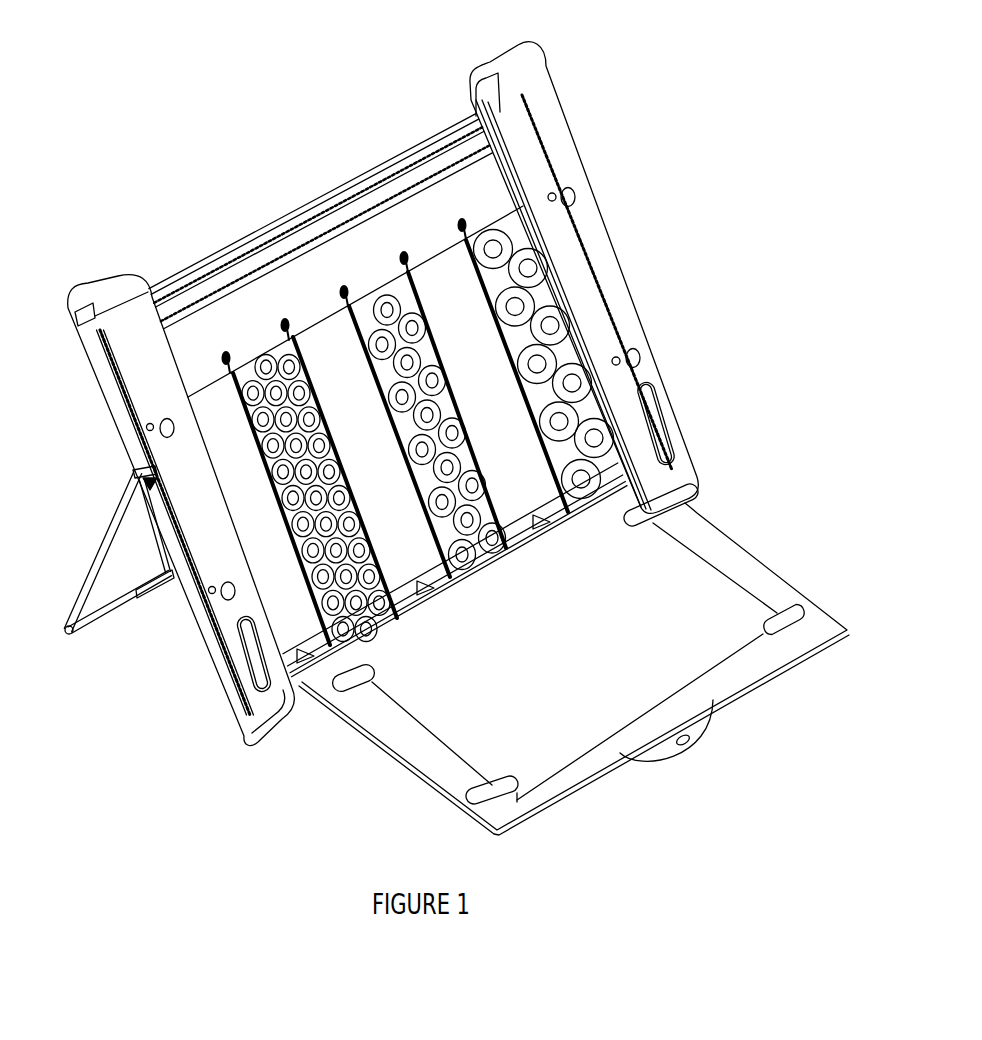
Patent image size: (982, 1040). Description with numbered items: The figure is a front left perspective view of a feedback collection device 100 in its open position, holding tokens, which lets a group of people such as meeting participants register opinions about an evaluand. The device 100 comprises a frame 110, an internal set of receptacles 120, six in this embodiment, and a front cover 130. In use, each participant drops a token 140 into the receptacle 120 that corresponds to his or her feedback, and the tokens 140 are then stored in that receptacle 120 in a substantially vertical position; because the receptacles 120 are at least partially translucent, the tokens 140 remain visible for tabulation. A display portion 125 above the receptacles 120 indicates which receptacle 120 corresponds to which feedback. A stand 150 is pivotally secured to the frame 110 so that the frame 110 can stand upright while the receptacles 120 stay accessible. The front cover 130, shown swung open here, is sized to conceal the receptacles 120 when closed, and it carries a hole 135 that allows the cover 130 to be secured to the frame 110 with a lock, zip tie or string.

The feedback collection device 100 is at (178, 93).
The frame 110 is at (552, 122).
The receptacles 120 is at (232, 450).
The display portion 125 is at (305, 285).
The front cover 130 is at (457, 705).
The hole 135 is at (690, 742).
The tokens 140 is at (553, 322).
The stand 150 is at (112, 612).